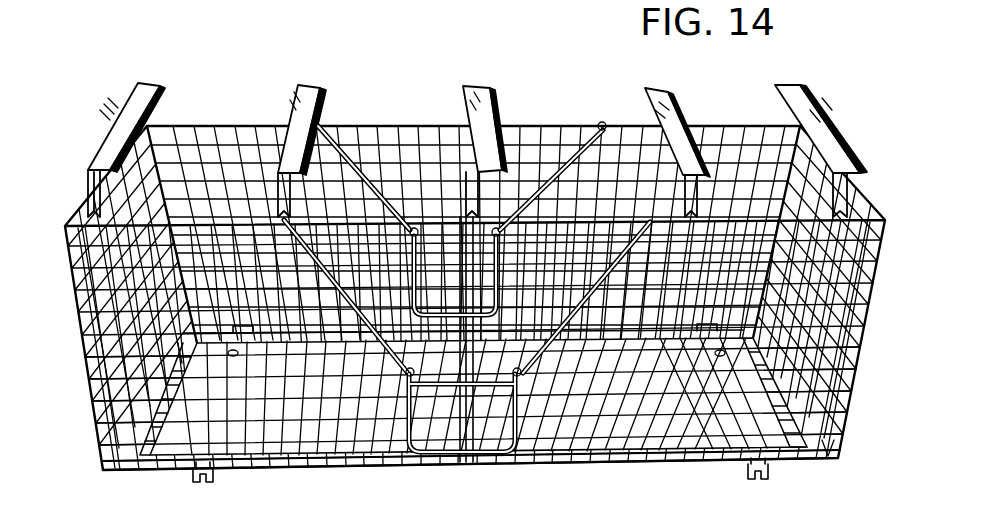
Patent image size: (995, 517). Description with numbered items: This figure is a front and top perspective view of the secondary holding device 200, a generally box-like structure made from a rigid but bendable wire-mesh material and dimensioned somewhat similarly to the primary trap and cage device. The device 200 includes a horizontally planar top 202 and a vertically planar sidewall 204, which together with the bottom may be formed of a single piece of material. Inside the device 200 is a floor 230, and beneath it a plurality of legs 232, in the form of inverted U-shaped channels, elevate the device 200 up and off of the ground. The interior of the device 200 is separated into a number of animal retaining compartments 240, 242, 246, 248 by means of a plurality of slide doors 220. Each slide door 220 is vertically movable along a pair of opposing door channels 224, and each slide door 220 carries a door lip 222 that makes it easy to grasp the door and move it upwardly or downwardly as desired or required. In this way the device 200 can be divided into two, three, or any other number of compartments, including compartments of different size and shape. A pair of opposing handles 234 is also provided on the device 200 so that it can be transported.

The secondary holding device 200 is at (262, 70).
The top 202 is at (390, 146).
The sidewall 204 is at (350, 403).
The slide door 220 is at (100, 196).
The door lip 222 is at (125, 122).
The door channel 224 is at (160, 152).
The floor 230 is at (715, 425).
The leg 232 is at (220, 477).
The handle 234 is at (462, 457).
The animal retaining compartment 240 is at (107, 347).
The animal retaining compartment 242 is at (338, 160).
The animal retaining compartment 246 is at (588, 200).
The animal retaining compartment 248 is at (883, 245).